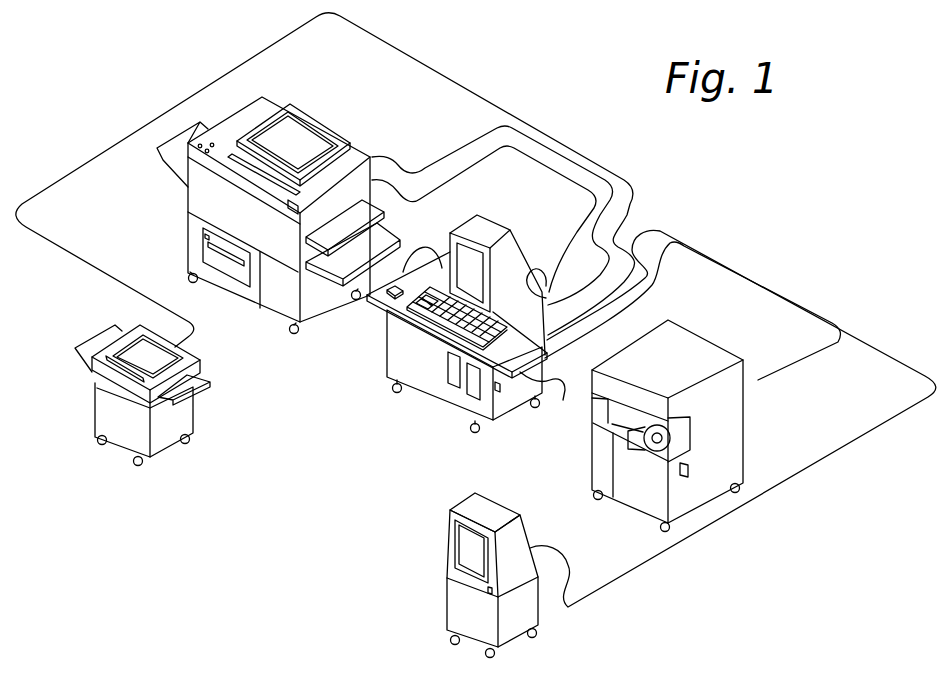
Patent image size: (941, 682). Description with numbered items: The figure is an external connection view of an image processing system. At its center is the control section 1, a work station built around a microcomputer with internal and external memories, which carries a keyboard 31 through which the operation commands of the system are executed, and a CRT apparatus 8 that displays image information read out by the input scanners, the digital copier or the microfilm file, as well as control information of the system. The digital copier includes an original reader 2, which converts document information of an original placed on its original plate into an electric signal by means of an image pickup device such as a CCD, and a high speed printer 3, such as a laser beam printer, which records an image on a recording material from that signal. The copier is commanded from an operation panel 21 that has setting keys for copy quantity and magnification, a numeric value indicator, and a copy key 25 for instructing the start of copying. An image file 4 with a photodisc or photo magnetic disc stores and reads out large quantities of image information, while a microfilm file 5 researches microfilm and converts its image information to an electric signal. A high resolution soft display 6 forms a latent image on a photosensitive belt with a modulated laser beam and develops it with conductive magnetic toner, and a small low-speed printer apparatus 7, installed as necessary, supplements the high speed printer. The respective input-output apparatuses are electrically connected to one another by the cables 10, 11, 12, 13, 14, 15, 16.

The control section 1 is at (393, 353).
The original reader 2 is at (273, 98).
The high speed printer 3 is at (196, 198).
The image file 4 is at (247, 283).
The microfilm file 5 is at (713, 353).
The high resolution soft display 6 is at (492, 507).
The printer apparatus 7 is at (95, 417).
The CRT apparatus 8 is at (473, 257).
The cable 10 is at (458, 86).
The cable 11 is at (450, 152).
The cable 12 is at (465, 162).
The cable 13 is at (752, 265).
The cable 14 is at (717, 263).
The cable 15 is at (432, 240).
The cable 16 is at (537, 268).
The operation panel 21 is at (260, 180).
The copy key 25 is at (293, 198).
The keyboard 31 is at (547, 399).